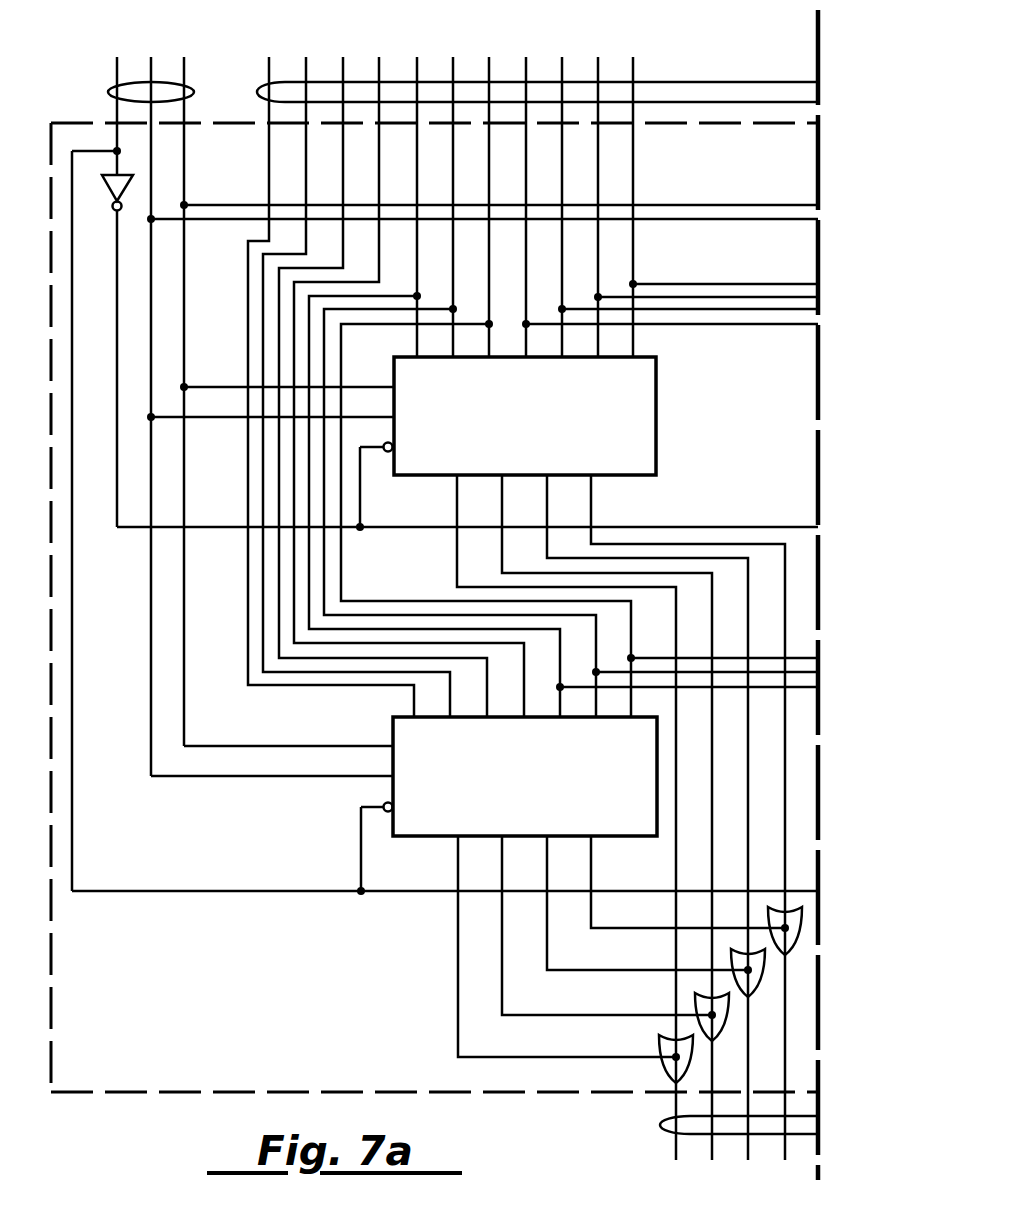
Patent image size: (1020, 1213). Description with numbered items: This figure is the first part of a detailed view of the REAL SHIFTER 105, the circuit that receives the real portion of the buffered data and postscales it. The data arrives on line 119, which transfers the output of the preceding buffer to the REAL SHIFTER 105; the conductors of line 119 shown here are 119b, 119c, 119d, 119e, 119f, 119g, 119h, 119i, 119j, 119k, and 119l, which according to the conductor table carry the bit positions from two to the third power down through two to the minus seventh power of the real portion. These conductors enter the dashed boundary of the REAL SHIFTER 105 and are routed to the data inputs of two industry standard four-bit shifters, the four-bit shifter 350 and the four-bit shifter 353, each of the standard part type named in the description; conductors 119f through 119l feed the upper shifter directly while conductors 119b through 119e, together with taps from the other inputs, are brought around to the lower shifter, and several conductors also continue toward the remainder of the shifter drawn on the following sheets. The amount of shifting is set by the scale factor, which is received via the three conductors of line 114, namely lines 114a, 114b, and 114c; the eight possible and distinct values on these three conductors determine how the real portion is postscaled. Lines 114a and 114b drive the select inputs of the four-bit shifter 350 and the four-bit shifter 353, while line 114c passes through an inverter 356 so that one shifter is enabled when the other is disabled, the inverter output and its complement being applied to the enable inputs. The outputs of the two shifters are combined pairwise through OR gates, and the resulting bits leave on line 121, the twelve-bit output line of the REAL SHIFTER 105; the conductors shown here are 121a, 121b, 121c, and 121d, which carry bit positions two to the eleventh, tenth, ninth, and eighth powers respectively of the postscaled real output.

The REAL SHIFTER 105 is at (118, 1094).
The line 114 is at (109, 89).
The line 114a is at (184, 68).
The line 114b is at (150, 68).
The line 114c is at (117, 68).
The line 119 is at (716, 82).
The conductor 119b is at (269, 68).
The conductor 119c is at (306, 68).
The conductor 119d is at (343, 68).
The conductor 119e is at (379, 68).
The conductor 119f is at (417, 68).
The conductor 119g is at (453, 68).
The conductor 119h is at (489, 68).
The conductor 119i is at (526, 68).
The conductor 119j is at (562, 68).
The conductor 119k is at (598, 68).
The conductor 119l is at (633, 68).
The 4-BIT SHIFTER 350 is at (657, 408).
The 4-BIT SHIFTER 353 is at (418, 838).
The inverter 356 is at (112, 188).
The line 121 is at (660, 1125).
The conductor 121a is at (484, 1057).
The conductor 121b is at (526, 1015).
The conductor 121c is at (568, 970).
The conductor 121d is at (603, 927).